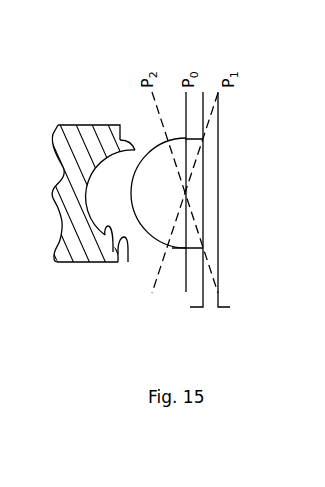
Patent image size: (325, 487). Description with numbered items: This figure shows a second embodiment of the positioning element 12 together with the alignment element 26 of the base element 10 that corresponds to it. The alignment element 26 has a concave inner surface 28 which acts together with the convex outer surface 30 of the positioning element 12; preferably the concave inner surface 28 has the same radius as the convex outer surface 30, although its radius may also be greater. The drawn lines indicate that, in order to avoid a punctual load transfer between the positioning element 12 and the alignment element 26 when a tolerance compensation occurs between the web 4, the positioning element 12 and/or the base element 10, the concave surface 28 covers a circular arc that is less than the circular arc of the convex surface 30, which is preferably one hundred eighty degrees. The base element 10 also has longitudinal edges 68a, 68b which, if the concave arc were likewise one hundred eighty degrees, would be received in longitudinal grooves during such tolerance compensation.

The base element 10 is at (75, 248).
The longitudinal edge 68a is at (131, 144).
The longitudinal edge 68b is at (128, 262).
The concave inner surface 28 is at (112, 240).
The convex outer surface 30 is at (149, 236).
The positioning element 12 is at (181, 258).
The web 4 is at (218, 168).
The alignment element 26 is at (85, 192).